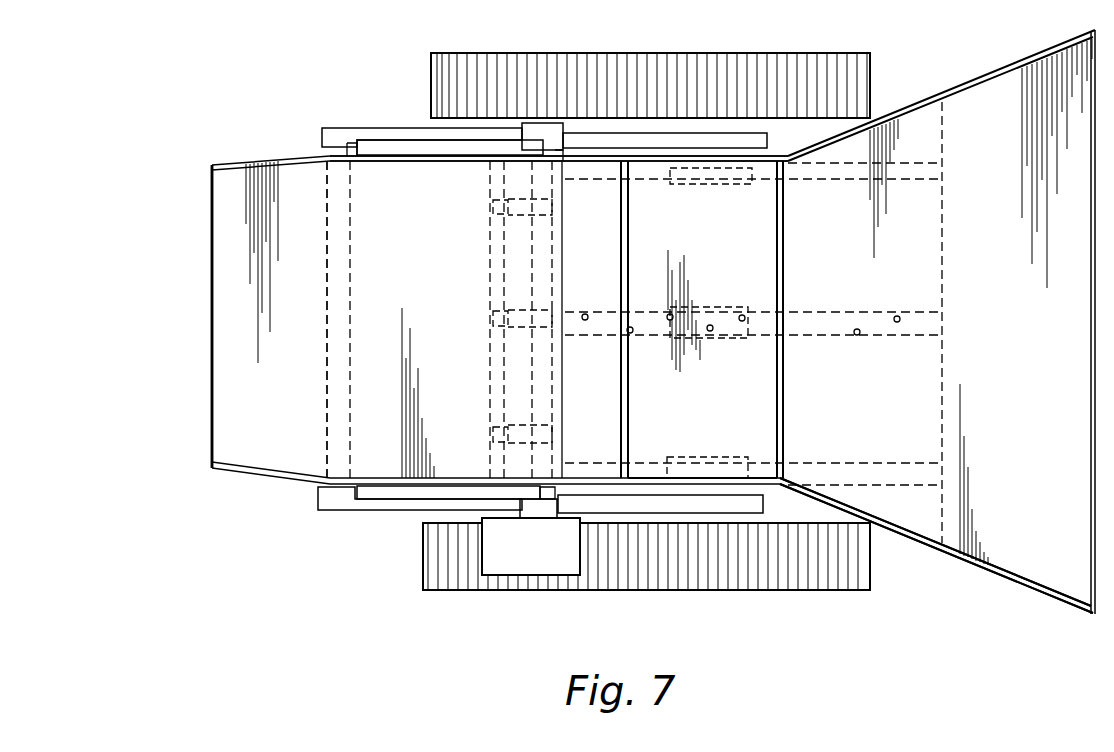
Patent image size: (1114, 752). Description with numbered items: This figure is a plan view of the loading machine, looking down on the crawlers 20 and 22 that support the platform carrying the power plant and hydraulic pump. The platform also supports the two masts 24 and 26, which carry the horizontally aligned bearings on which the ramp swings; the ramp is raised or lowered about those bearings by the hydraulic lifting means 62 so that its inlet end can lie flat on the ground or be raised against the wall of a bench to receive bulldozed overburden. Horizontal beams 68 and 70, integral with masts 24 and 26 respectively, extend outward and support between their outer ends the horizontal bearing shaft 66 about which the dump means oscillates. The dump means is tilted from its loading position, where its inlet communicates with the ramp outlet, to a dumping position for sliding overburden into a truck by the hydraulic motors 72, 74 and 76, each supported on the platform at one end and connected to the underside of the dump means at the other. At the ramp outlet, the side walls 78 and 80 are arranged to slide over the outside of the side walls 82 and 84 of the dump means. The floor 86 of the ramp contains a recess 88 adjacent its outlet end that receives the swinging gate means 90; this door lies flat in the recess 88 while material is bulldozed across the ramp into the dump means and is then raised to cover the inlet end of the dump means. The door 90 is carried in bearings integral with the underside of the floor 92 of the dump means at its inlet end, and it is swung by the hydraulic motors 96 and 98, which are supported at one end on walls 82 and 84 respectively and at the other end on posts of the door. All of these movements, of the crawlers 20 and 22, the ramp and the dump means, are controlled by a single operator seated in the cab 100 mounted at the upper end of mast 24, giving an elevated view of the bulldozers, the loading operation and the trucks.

The crawler 20 is at (736, 578).
The crawler 22 is at (632, 62).
The mast 24 is at (553, 513).
The mast 26 is at (572, 157).
The hydraulic lifting means 62 is at (706, 190).
The horizontal bearing shaft 66 is at (328, 365).
The horizontal beam 68 is at (328, 506).
The horizontal beam 70 is at (326, 128).
The hydraulic motor 72 is at (545, 435).
The hydraulic motor 74 is at (500, 322).
The hydraulic motor 76 is at (546, 208).
The side wall 78 is at (722, 484).
The side wall 80 is at (733, 160).
The side wall of dump means 82 is at (412, 478).
The side wall of dump means 84 is at (378, 162).
The floor of the ramp 86 is at (1005, 560).
The recess 88 is at (772, 412).
The swinging gate means 90 is at (765, 262).
The floor of the dump means 92 is at (225, 312).
The hydraulic motor 96 is at (372, 498).
The hydraulic motor 98 is at (388, 142).
The cab 100 is at (503, 568).